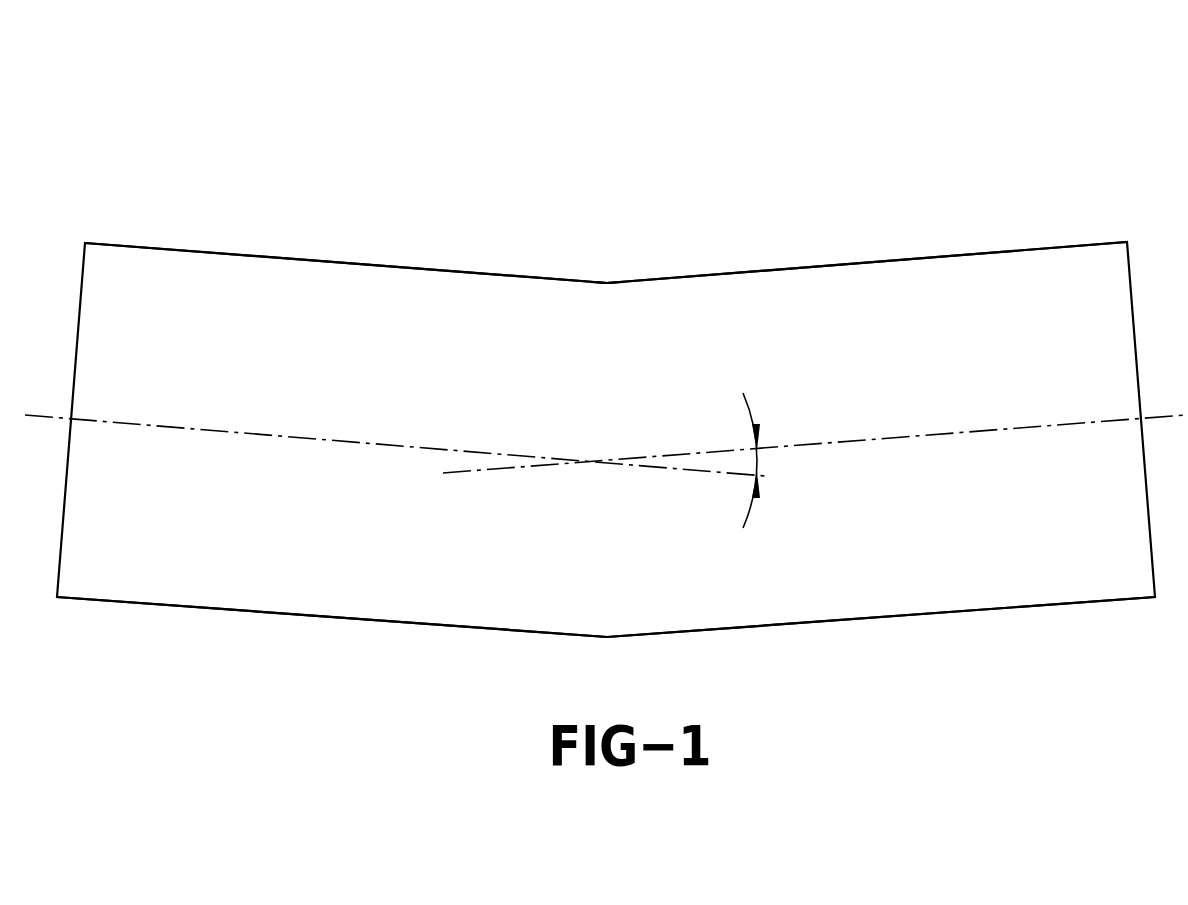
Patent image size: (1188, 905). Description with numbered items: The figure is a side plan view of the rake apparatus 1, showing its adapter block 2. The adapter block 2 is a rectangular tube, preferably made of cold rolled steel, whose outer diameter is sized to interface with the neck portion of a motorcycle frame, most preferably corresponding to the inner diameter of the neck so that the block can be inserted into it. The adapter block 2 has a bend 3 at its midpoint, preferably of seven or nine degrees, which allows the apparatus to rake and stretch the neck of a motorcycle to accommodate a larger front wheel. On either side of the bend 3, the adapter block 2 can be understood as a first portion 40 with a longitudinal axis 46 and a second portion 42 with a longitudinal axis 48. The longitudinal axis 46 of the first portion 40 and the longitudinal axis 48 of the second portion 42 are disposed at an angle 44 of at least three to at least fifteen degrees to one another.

The rake apparatus 1 is at (298, 148).
The adapter block 2 is at (843, 322).
The bend 3 is at (607, 283).
The first portion 40 is at (236, 611).
The second portion 42 is at (975, 611).
The angle 44 is at (758, 465).
The longitudinal axis of the first portion 46 is at (248, 432).
The longitudinal axis of the second portion 48 is at (962, 431).